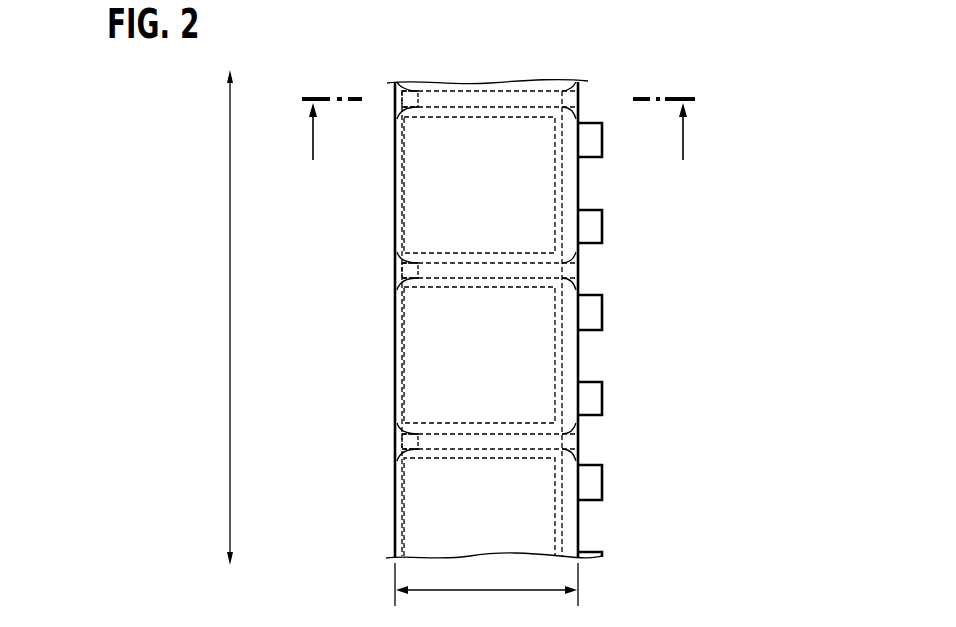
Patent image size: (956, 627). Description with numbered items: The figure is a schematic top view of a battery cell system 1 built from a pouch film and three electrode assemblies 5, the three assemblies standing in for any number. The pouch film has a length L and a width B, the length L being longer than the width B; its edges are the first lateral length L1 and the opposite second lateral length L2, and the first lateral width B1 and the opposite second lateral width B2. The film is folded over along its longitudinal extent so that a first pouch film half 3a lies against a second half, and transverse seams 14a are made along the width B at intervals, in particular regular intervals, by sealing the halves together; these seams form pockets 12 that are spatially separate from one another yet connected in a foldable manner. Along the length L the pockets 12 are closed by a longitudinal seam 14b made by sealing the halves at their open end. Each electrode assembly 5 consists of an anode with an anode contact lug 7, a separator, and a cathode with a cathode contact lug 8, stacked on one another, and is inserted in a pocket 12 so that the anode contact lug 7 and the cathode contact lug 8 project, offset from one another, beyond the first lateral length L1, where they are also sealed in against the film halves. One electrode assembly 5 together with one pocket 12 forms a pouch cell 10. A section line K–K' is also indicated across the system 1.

The battery cell system 1 is at (729, 90).
The first pouch film half 3a is at (467, 452).
The electrode assembly 5 is at (433, 176).
The anode contact lug 7 is at (590, 313).
The cathode contact lug 8 is at (593, 230).
The pouch cell 10 is at (383, 227).
The pocket 12 is at (420, 204).
The transverse seam 14a is at (513, 97).
The longitudinal seam 14b is at (572, 300).
The width B is at (486, 582).
The first lateral width B1 is at (443, 558).
The second lateral width B2 is at (460, 83).
The length L is at (230, 290).
The first lateral length L1 is at (578, 170).
The second lateral length L2 is at (395, 333).
The section line K is at (324, 133).
The section line K' is at (675, 133).